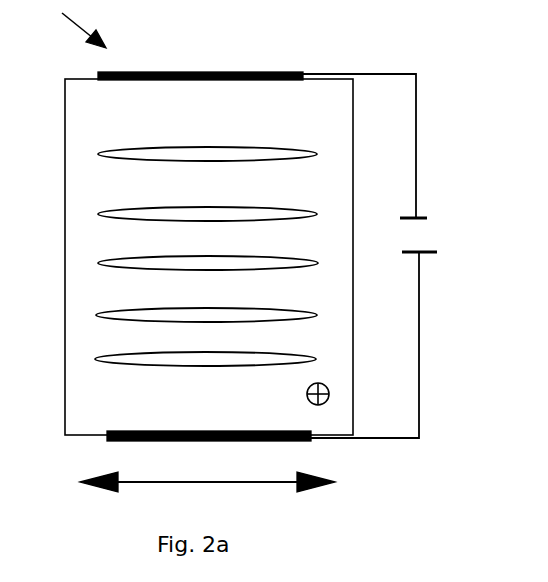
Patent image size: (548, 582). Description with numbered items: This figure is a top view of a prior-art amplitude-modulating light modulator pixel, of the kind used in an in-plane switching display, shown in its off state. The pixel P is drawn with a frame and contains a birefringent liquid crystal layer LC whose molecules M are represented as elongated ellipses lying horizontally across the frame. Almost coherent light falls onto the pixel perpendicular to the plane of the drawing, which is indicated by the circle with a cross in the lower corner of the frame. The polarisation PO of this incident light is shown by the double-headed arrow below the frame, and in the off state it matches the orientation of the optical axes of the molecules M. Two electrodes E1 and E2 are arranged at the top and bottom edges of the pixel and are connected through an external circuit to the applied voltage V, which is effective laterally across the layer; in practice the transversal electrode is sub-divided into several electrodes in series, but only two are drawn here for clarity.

The pixel P is at (76, 24).
The electrode E1 is at (268, 70).
The electrode E2 is at (310, 442).
The liquid crystal layer LC is at (209, 257).
The applied voltage V is at (380, 256).
The molecules M is at (319, 316).
The polarisation PO is at (213, 493).